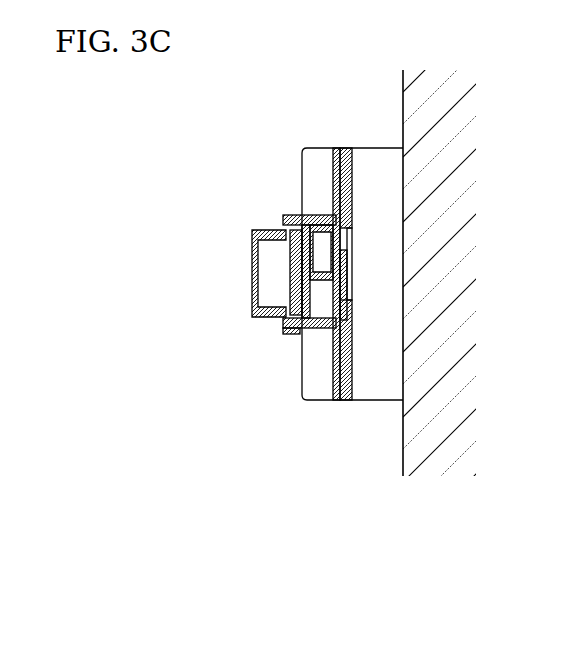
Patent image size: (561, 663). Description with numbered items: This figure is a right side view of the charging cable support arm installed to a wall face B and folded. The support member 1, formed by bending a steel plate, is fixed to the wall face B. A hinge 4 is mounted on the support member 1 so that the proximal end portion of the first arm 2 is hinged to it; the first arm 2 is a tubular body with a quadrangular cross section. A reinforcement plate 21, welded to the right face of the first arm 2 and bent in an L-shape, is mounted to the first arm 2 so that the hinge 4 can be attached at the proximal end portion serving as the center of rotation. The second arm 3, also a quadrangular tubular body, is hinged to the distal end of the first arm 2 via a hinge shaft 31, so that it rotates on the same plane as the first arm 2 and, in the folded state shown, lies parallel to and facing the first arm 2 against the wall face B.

The support member 1 is at (375, 148).
The reinforcement plate 21 is at (322, 148).
The hinge 4 is at (342, 148).
The first arm 2 is at (319, 214).
The second arm 3 is at (252, 273).
The hinge shaft 31 is at (295, 265).
The wall face B is at (403, 439).